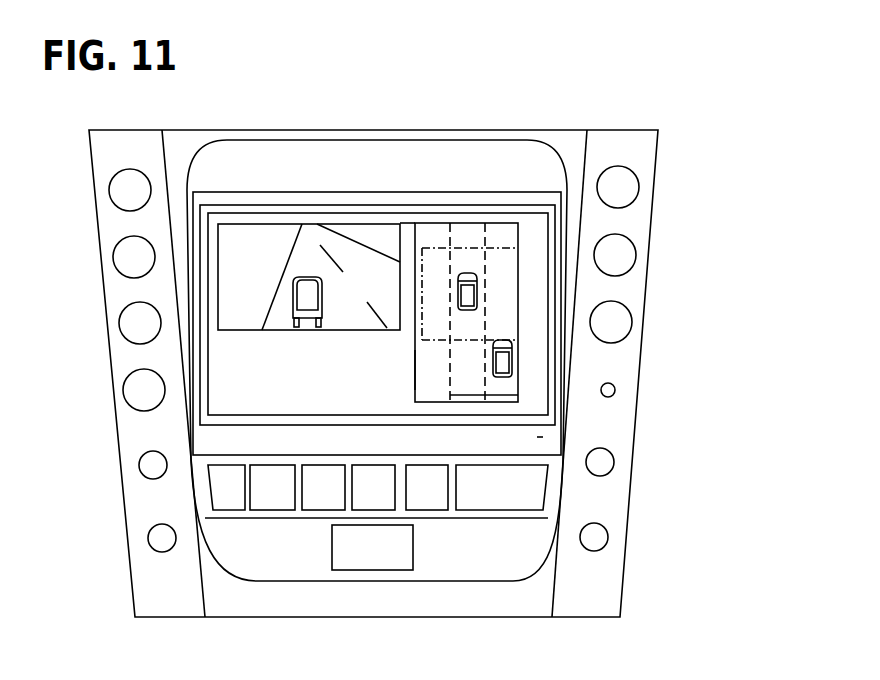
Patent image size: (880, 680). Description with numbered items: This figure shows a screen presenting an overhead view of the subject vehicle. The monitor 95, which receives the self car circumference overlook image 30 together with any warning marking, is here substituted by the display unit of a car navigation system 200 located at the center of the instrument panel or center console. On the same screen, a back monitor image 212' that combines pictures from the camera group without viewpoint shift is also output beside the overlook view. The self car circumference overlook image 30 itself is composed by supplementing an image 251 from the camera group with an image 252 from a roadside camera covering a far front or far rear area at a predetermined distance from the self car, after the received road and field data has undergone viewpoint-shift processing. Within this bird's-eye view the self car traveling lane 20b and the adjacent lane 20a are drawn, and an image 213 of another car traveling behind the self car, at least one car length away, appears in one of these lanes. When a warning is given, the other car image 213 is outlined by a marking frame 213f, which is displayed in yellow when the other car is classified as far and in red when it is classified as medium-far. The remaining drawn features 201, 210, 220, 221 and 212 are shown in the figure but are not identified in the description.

The car navigation system 200 is at (618, 143).
The display screen 201 is at (535, 247).
The display unit 221 is at (370, 233).
The camera image display area 220 is at (237, 220).
The back monitor image 212' is at (293, 207).
The peripheral image display area 210 is at (502, 322).
The image from the far camera 252 is at (492, 227).
The image from the camera group 251 is at (502, 237).
The own vehicle icon 212 is at (590, 286).
The other car image 213 is at (503, 362).
The marking frame 213f is at (512, 348).
The monitor 95 is at (543, 437).
The self car circumference overlook image 30 is at (414, 368).
The self car traveling lane 20b is at (468, 395).
The adjacent lane 20a is at (500, 395).